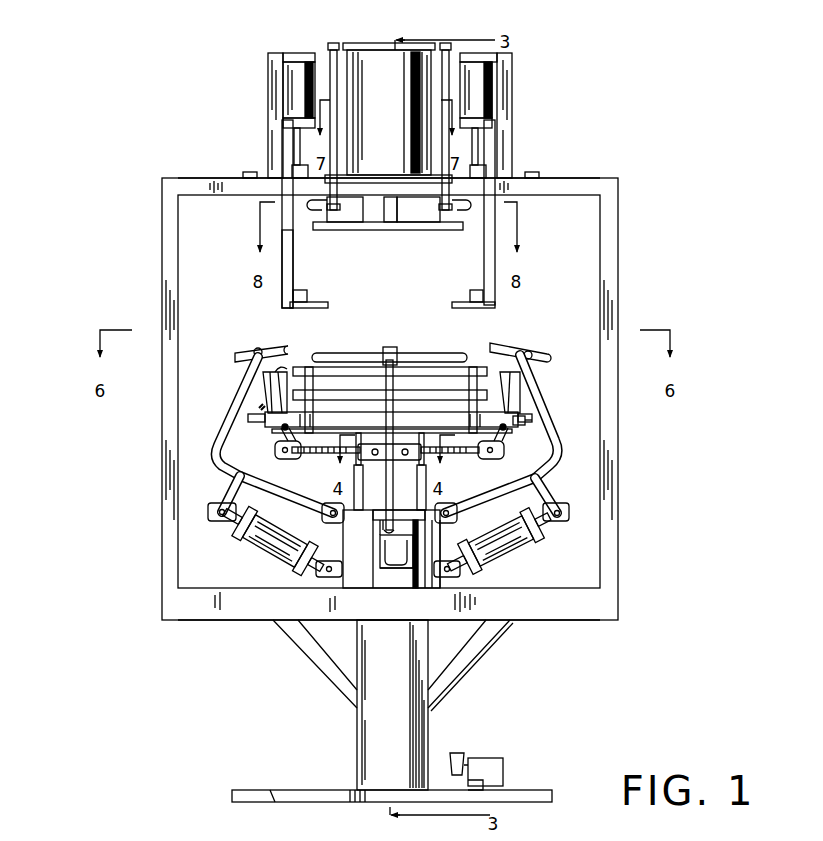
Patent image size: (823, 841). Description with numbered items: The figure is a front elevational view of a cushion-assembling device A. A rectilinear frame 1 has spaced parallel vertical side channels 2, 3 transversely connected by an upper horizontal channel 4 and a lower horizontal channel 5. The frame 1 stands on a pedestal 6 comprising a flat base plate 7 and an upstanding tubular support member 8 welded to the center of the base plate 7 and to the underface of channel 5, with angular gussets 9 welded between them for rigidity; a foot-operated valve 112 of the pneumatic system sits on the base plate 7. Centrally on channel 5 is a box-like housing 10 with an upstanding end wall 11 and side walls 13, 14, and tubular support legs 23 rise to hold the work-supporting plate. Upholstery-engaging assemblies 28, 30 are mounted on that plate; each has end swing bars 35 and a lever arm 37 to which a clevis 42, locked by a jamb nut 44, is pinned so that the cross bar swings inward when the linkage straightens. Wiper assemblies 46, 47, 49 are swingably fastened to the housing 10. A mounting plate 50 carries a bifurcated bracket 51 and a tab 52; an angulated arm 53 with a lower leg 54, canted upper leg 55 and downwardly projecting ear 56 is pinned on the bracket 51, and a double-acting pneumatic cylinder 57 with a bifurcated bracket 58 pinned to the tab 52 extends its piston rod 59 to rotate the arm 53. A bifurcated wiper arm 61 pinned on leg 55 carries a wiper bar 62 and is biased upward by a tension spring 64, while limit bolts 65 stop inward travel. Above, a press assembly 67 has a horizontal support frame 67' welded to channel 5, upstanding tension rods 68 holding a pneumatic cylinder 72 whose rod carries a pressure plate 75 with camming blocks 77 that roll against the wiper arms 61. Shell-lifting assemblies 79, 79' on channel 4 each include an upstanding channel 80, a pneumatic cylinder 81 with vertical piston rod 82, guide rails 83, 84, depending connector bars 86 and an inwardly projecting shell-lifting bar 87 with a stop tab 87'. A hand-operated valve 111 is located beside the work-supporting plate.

The frame 1 is at (622, 552).
The side channel 2 is at (162, 306).
The side channel 3 is at (618, 308).
The upper horizontal channel 4 is at (573, 180).
The lower horizontal channel 5 is at (535, 622).
The pedestal 6 is at (356, 756).
The base plate 7 is at (534, 790).
The tubular support member 8 is at (428, 745).
The gussets 9 is at (308, 660).
The box-like housing 10 is at (370, 595).
The end wall 11 is at (429, 587).
The side wall 13 is at (343, 540).
The side wall 14 is at (434, 537).
The tubular support legs 23 is at (428, 482).
The upholstery-engaging assembly 28 is at (558, 446).
The upholstery-engaging assembly 30 is at (262, 447).
The end swing bars 35 is at (265, 392).
The lever arm 37 is at (280, 450).
The clevis 42 is at (290, 456).
The jamb nut 44 is at (301, 455).
The wiper assembly 46 is at (442, 355).
The wiper assembly 47 is at (578, 453).
The wiper assembly 49 is at (210, 450).
The mounting plate 50 is at (389, 587).
The bifurcated bracket 51 is at (323, 517).
The tab 52 is at (335, 585).
The angulated arm 53 is at (233, 481).
The lower leg 54 is at (498, 492).
The upper leg 55 is at (236, 418).
The ear 56 is at (549, 492).
The double-acting pneumatic cylinder 57 is at (508, 558).
The bifurcated bracket 58 is at (470, 572).
The piston rod 59 is at (252, 525).
The bifurcated wiper arm 61 is at (535, 362).
The wiper bar 62 is at (334, 356).
The tension spring 64 is at (543, 375).
The limit bolts 65 is at (528, 419).
The press assembly 67 is at (315, 122).
The horizontal support frame 67' is at (500, 126).
The upstanding rods 68 is at (352, 150).
The double-acting pneumatic cylinder 72 is at (397, 168).
The pressure plate 75 is at (386, 226).
The camming blocks 77 is at (425, 218).
The shell-lifting assembly 79 is at (271, 115).
The shell-lifting assembly 79' is at (504, 115).
The upstanding channel 80 is at (268, 153).
The double-acting pneumatic cylinder 81 is at (296, 76).
The piston rod 82 is at (288, 130).
The guide rail 83 is at (282, 300).
The guide rail 84 is at (484, 285).
The connector bars 86 is at (294, 242).
The shell-lifting bar 87 is at (317, 291).
The stop tab 87' is at (322, 314).
The hand-operated valve 111 is at (520, 412).
The foot-operated valve 112 is at (478, 757).
The cushion-assembling device A is at (88, 650).